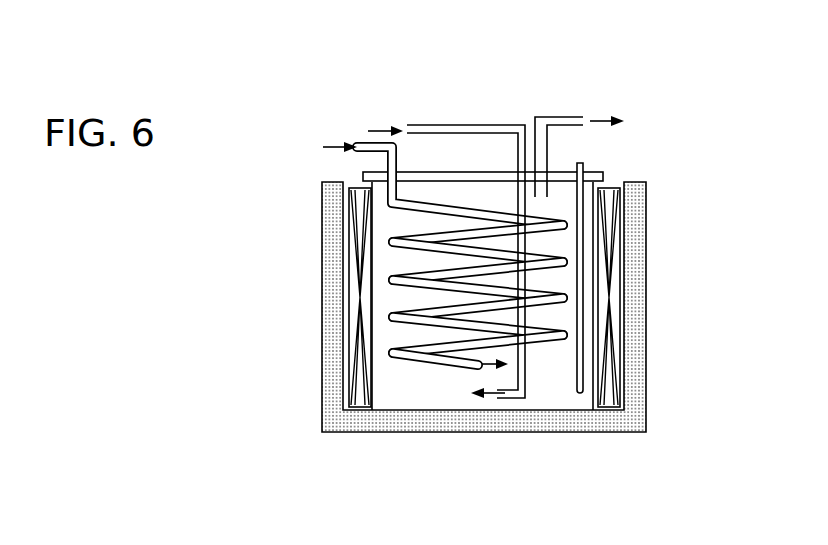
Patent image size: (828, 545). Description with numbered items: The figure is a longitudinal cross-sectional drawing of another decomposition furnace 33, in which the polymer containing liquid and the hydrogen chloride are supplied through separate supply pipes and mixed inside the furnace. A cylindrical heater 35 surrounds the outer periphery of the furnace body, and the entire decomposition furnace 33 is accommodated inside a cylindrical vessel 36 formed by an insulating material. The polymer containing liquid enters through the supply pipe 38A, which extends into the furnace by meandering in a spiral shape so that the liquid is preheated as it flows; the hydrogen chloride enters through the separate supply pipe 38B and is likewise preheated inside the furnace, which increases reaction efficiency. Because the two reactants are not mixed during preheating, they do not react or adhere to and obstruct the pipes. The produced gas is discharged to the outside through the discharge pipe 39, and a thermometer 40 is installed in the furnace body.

The decomposition furnace 33 is at (404, 84).
The cylindrical heater 35 is at (608, 207).
The cylindrical vessel 36 is at (646, 252).
The supply pipe 38A is at (400, 157).
The supply pipe 38B is at (486, 125).
The discharge pipe 39 is at (565, 117).
The thermometer 40 is at (582, 166).